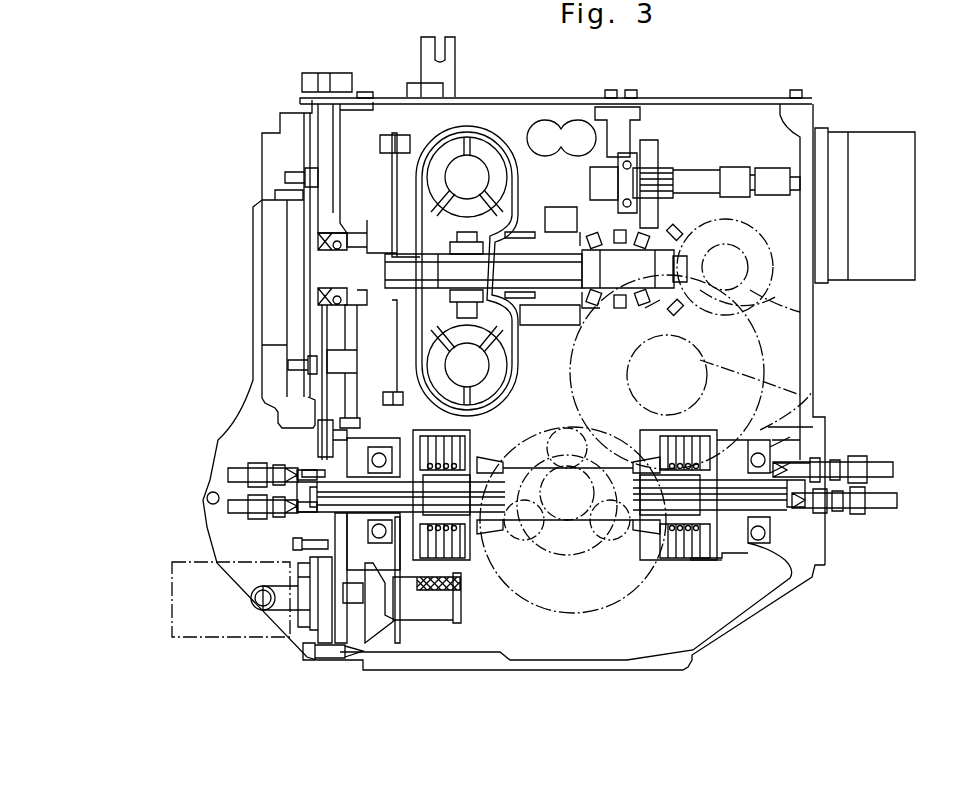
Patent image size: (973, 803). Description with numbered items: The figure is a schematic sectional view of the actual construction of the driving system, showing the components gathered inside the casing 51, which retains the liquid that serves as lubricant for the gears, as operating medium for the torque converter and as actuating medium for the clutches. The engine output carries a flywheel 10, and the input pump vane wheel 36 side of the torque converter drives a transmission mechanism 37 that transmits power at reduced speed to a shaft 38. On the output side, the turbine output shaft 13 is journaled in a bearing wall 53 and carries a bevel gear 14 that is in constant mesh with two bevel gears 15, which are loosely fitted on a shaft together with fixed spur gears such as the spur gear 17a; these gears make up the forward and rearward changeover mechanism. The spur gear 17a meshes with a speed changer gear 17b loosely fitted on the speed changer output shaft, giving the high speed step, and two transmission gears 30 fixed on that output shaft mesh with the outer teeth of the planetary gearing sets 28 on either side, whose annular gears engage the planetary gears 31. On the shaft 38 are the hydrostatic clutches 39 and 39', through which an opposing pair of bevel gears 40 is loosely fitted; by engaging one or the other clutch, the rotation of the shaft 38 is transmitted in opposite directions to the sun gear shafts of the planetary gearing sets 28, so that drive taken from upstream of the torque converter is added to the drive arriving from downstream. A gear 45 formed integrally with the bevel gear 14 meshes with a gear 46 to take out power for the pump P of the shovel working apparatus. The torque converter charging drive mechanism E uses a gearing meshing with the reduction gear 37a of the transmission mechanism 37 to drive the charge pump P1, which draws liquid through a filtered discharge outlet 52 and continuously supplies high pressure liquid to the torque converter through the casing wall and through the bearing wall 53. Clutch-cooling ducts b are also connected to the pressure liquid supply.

The flywheel 10 is at (268, 148).
The input pump vane wheel 36 is at (415, 128).
The torque converter charging drive mechanism E is at (506, 118).
The transmission mechanism 37 is at (329, 341).
The bearing wall 53 is at (523, 298).
The gear 45 is at (663, 227).
The gear 46 is at (660, 157).
The bevel gear 14 is at (657, 212).
The pump P is at (913, 160).
The turbine output shaft 13 is at (700, 266).
The bevel gears 15 is at (790, 300).
The spur gear 17a is at (800, 313).
The transmission gears 30 is at (777, 364).
The speed changer gear 17b is at (810, 392).
The planetary gears 31 is at (588, 522).
The bevel gears 40 is at (479, 532).
The clutch-cooling ducts b is at (240, 512).
The shaft 38 is at (613, 512).
The planetary gearing sets 28 is at (530, 620).
The hydrostatic clutch 39 is at (732, 612).
The casing 51 is at (775, 598).
The hydrostatic clutch 39' is at (427, 613).
The reduction gear 37a is at (365, 617).
The filtered discharge outlet 52 is at (288, 624).
The charge pump P1 is at (178, 592).